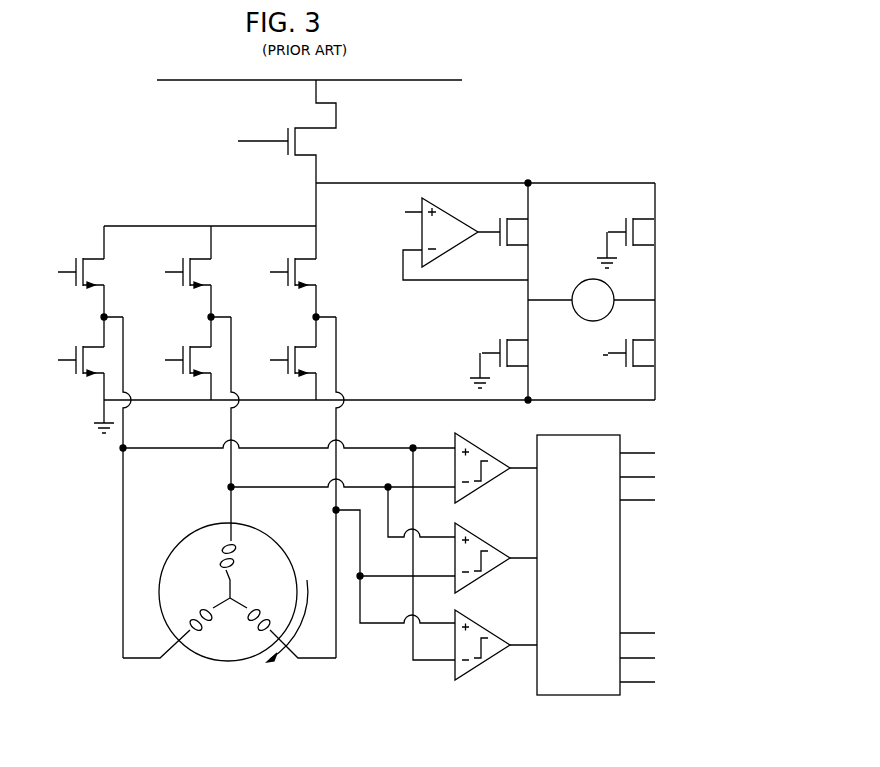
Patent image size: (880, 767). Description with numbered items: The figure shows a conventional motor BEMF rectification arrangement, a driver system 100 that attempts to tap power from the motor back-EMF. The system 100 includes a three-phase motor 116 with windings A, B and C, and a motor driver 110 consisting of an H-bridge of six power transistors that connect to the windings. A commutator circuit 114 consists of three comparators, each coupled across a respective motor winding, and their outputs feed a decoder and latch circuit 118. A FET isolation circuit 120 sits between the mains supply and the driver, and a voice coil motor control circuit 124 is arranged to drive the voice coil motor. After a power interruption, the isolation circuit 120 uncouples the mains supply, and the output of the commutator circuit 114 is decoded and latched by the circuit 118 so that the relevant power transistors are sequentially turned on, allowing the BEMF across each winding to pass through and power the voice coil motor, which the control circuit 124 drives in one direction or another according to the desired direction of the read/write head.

The driver system 100 is at (488, 104).
The motor driver 110 is at (313, 207).
The commutator circuit 114 is at (500, 692).
The 3-phase motor 116 is at (218, 663).
The decoder and latch circuit 118 is at (620, 550).
The FET isolation circuit 120 is at (335, 120).
The VCM control circuit 124 is at (652, 168).